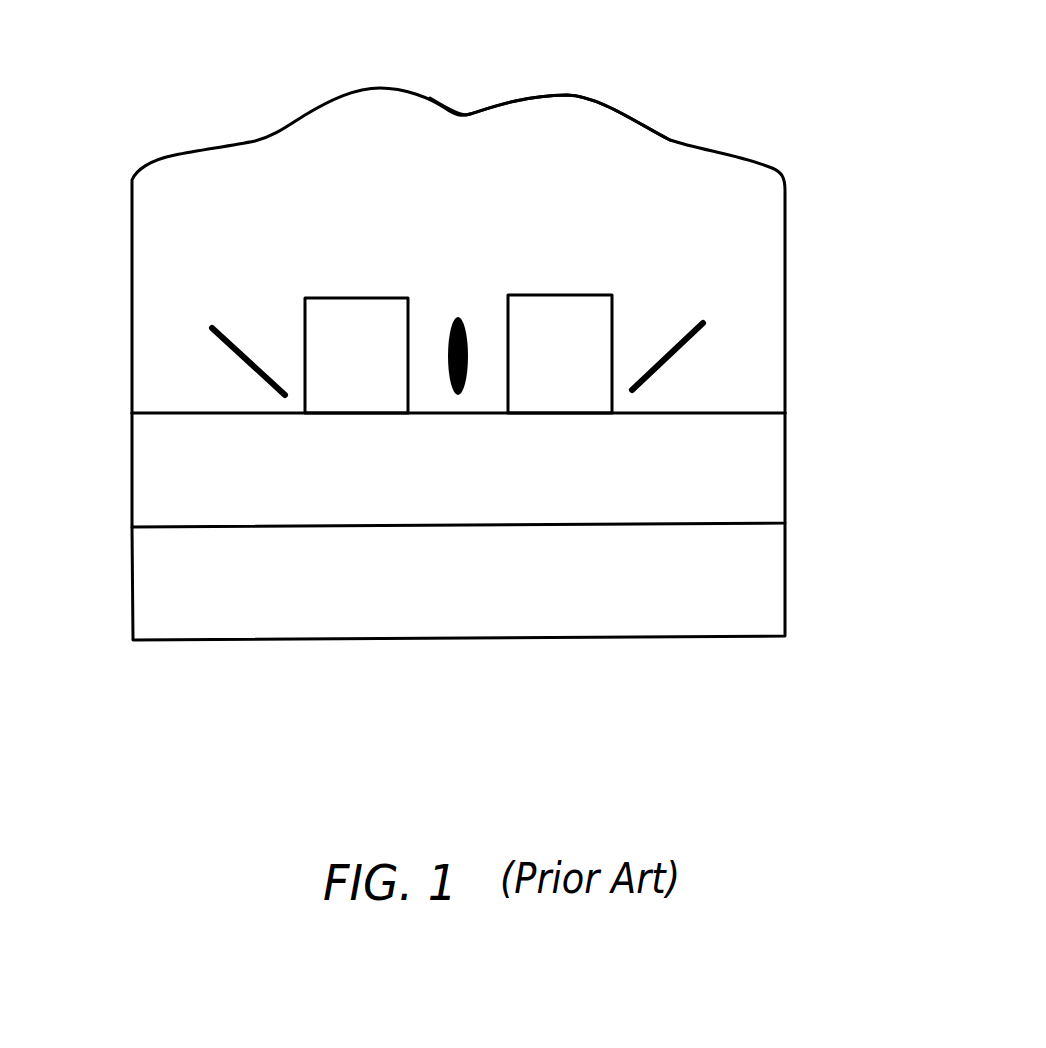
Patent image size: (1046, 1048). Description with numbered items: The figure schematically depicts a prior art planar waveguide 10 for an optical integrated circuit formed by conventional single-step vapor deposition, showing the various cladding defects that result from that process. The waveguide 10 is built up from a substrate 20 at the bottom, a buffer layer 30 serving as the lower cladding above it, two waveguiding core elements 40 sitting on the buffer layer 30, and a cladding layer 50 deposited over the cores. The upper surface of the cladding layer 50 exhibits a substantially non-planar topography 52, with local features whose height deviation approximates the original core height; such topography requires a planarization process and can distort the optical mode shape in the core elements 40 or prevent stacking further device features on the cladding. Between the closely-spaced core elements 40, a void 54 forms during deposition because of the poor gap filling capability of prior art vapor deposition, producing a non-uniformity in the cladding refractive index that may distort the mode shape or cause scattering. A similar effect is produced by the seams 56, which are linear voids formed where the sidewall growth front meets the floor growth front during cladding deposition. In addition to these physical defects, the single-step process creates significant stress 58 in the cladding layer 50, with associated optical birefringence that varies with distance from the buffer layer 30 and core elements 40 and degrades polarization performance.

The waveguide 10 is at (462, 330).
The substrate 20 is at (697, 592).
The buffer layer 30 is at (704, 484).
The waveguiding core elements 40 is at (379, 341).
The cladding layer 50 is at (303, 167).
The non-planar topography 52 is at (655, 107).
The void 54 is at (487, 298).
The seams 56 is at (728, 313).
The stress 58 is at (232, 273).